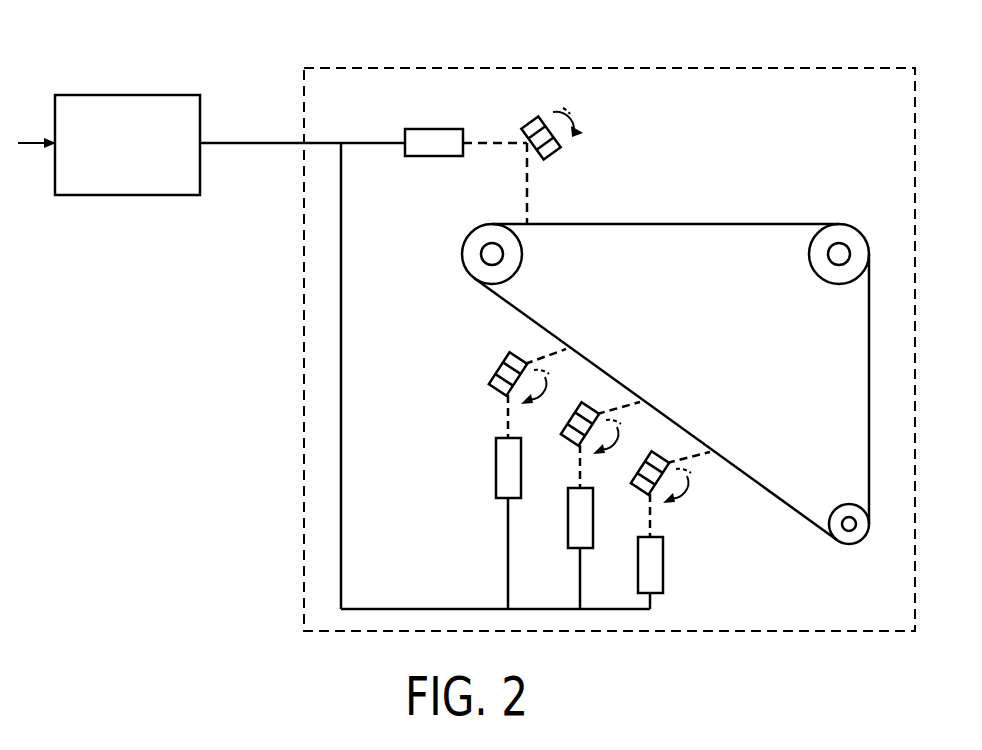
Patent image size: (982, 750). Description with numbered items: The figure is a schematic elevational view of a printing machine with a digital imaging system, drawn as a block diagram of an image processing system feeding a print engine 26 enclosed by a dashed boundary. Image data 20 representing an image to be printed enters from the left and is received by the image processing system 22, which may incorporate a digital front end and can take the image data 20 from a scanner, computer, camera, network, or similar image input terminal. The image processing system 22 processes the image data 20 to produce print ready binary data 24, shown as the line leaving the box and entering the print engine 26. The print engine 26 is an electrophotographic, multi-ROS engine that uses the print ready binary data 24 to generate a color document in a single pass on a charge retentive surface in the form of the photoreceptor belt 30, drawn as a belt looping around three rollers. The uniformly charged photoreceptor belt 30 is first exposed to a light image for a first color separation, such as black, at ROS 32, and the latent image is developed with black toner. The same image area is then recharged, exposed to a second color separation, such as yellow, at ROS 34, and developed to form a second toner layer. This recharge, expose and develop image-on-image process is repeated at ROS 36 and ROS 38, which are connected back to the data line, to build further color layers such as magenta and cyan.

The image data 20 is at (22, 140).
The image processing system 22 is at (127, 93).
The print ready binary data 24 is at (246, 141).
The print engine 26 is at (628, 68).
The photoreceptor belt 30 is at (667, 223).
The ROS 32 is at (557, 117).
The ROS 34 is at (492, 348).
The ROS 36 is at (564, 398).
The ROS 38 is at (634, 446).